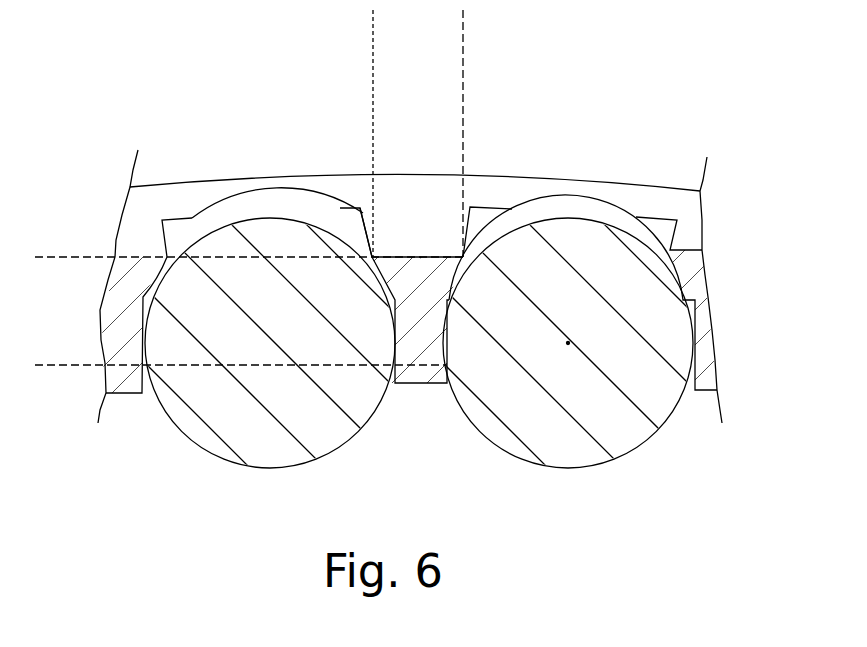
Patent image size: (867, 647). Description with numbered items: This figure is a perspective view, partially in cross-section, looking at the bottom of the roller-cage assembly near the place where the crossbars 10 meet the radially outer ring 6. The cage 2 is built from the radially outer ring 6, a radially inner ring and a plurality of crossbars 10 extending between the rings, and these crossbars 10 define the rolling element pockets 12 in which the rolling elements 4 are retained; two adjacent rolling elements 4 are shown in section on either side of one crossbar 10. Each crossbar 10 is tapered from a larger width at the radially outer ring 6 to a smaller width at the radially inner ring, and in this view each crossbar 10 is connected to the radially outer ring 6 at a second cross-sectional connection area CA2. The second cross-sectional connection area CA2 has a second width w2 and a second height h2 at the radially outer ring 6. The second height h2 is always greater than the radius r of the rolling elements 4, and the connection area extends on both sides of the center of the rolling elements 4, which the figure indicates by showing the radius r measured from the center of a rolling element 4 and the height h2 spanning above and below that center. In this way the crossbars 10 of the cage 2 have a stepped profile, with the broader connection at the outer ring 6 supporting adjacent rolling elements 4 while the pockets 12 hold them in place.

The cage 2 is at (203, 200).
The rolling elements 4 is at (493, 425).
The radially outer ring 6 is at (635, 200).
The crossbars 10 is at (412, 215).
The rolling element pockets 12 is at (360, 217).
The second cross-sectional connection area CA2 is at (425, 252).
The second height h2 is at (43, 268).
The second width w2 is at (452, 32).
The radius r is at (641, 259).